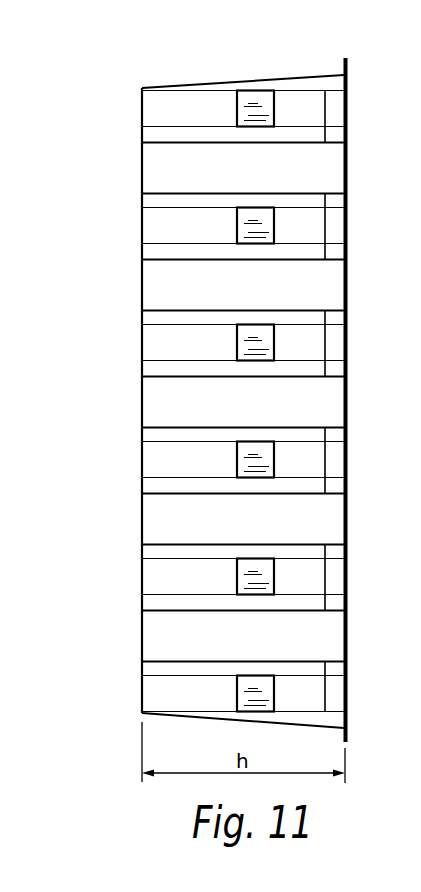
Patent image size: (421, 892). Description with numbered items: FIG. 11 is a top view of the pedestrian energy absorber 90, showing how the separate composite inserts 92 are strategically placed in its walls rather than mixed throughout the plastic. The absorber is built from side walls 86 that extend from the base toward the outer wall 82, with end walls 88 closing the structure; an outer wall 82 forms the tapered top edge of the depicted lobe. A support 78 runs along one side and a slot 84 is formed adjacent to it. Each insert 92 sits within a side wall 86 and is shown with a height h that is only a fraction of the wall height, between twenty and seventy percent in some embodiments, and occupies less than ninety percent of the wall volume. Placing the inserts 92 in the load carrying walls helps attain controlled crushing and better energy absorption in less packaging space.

The support bar 78 is at (348, 283).
The outer wall 82 is at (142, 225).
The slot 84 is at (335, 113).
The side wall 86 is at (168, 107).
The end wall 88 is at (297, 73).
The rack assembly 90 is at (229, 388).
The indicator label 92 is at (237, 103).